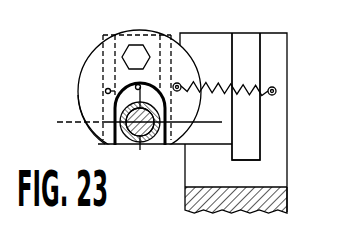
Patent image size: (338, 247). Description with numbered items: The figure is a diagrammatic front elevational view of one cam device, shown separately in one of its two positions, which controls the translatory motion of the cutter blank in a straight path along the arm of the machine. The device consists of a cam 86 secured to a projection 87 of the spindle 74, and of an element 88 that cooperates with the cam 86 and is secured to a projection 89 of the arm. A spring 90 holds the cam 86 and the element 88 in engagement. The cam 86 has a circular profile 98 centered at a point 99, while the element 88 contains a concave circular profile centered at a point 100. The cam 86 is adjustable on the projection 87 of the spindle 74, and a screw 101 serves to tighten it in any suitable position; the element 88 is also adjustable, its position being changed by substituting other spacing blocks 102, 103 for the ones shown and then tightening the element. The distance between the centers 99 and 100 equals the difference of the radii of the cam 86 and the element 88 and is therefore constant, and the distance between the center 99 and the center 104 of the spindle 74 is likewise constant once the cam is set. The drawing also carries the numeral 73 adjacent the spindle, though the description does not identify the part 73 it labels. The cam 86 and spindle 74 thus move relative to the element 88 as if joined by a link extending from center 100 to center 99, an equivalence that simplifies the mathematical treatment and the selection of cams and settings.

The shaft 73 is at (150, 150).
The spindle 74 is at (113, 146).
The cam 86 is at (88, 78).
The projection of spindle 87 is at (102, 68).
The element 88 is at (212, 48).
The projection of arm 89 is at (286, 192).
The spring 90 is at (254, 82).
The circular profile 98 is at (78, 95).
The center point of cam profile 99 is at (137, 85).
The center point of element profile 100 is at (106, 92).
The screw 101 is at (138, 57).
The spacing block 102 is at (250, 50).
The spacing block 103 is at (200, 150).
The center of spindle 104 is at (131, 146).